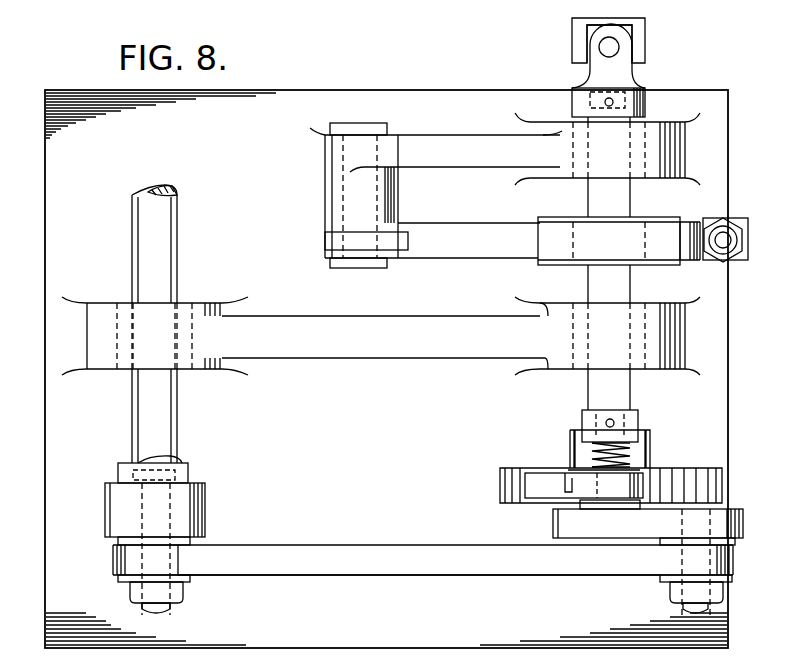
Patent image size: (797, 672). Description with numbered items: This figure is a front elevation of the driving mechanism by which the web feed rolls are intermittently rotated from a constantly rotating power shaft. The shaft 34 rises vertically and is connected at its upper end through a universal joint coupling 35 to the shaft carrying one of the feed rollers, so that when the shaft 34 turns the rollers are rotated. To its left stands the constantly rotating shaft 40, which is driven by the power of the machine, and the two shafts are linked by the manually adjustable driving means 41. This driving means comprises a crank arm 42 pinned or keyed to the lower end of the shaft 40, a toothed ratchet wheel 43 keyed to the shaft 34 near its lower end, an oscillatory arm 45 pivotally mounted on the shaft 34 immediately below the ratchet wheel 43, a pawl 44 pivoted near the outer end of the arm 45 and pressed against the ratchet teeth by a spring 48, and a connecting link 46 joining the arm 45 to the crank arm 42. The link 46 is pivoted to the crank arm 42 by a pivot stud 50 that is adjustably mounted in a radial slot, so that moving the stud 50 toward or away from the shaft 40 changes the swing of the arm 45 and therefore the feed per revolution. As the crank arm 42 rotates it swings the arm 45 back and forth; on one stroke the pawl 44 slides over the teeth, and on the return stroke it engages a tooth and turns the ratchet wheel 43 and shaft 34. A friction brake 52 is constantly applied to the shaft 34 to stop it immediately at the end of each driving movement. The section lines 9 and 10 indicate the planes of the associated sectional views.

The section line 9- 9 is at (118, 392).
The section line 10- 10 is at (153, 460).
The shaft 34 is at (591, 404).
The universal joint coupling 35 is at (618, 72).
The constantly rotating shaft 40 is at (170, 268).
The manually adjustable driving means 41 is at (434, 585).
The crank arm 42 is at (205, 512).
The toothed ratchet wheel 43 is at (690, 468).
The pawl 44 is at (553, 490).
The oscillatory arm 45 is at (742, 509).
The connecting link 46 is at (405, 545).
The spring 48 is at (578, 466).
The pivot stud 50 is at (166, 455).
The friction brake 52 is at (617, 236).